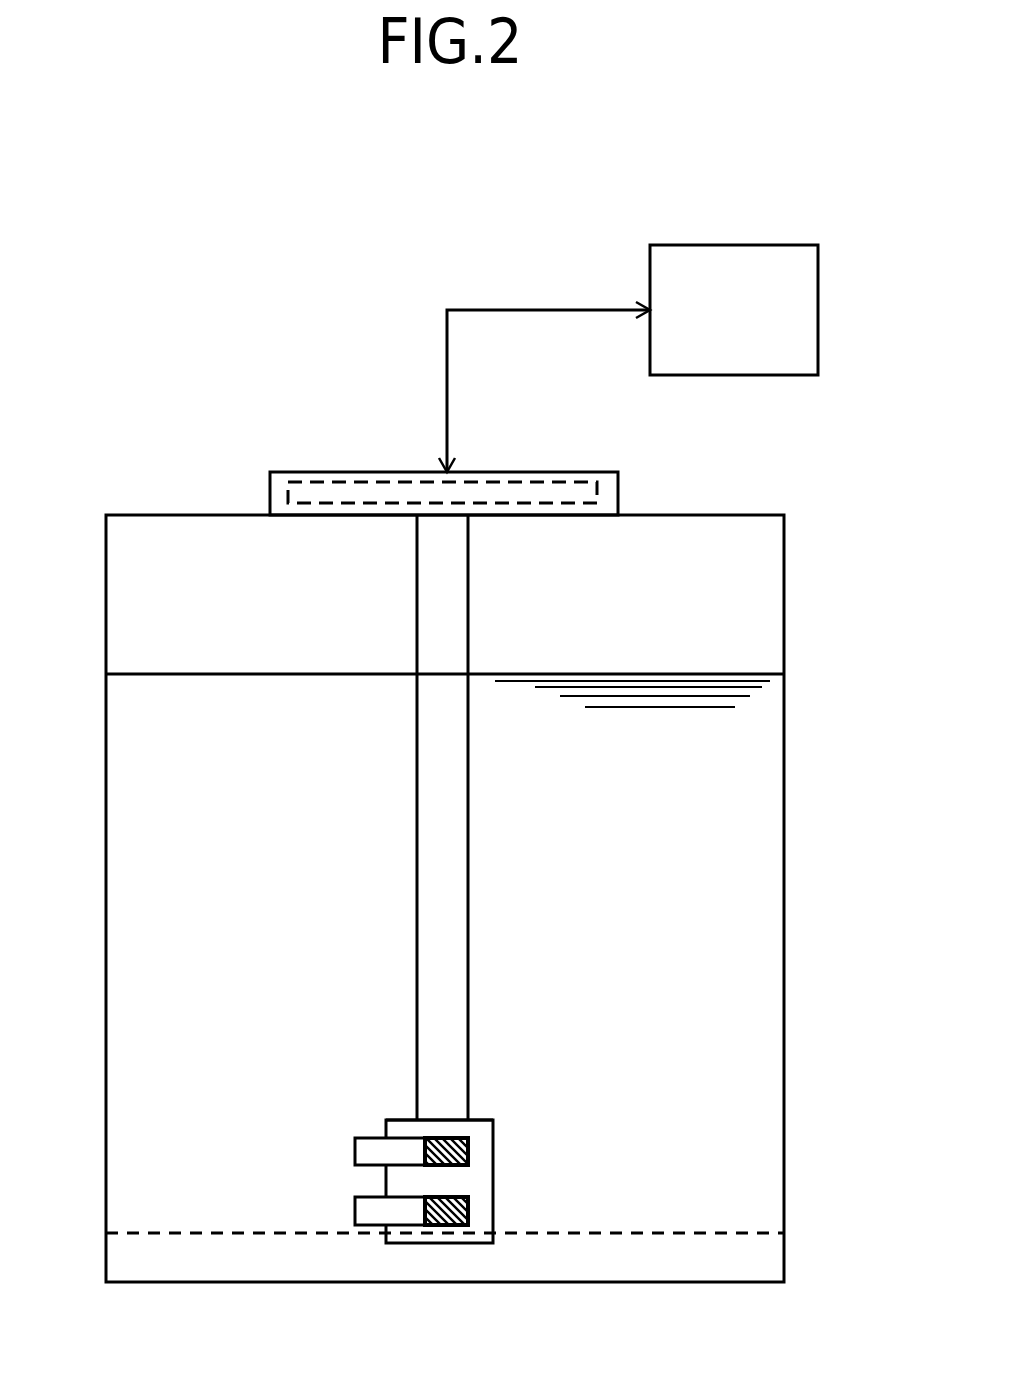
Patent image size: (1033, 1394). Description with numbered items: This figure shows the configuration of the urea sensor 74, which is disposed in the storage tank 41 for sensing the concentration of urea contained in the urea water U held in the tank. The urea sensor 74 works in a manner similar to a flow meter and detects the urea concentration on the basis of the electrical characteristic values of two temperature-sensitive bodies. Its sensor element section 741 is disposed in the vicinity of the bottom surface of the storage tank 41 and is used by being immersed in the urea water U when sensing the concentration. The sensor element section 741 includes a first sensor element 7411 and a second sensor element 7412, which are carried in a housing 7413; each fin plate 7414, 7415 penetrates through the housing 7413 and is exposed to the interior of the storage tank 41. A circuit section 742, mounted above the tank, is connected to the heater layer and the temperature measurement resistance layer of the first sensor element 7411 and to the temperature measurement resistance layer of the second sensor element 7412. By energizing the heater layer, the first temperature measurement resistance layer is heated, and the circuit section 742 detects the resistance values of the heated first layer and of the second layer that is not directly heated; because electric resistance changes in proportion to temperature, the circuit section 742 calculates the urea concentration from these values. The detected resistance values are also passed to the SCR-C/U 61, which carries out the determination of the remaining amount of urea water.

The storage tank 41 is at (785, 605).
The processing liquid U is at (122, 720).
The SCR-C/U 61 is at (793, 245).
The circuit section 742 is at (552, 482).
The urea sensor 74 is at (417, 637).
The sensor element section 741 is at (479, 1120).
The housing 7413 is at (398, 1120).
The fin plate 7415 is at (356, 1150).
The second sensor element 7412 is at (468, 1150).
The fin plate 7414 is at (356, 1211).
The first sensor element 7411 is at (468, 1210).